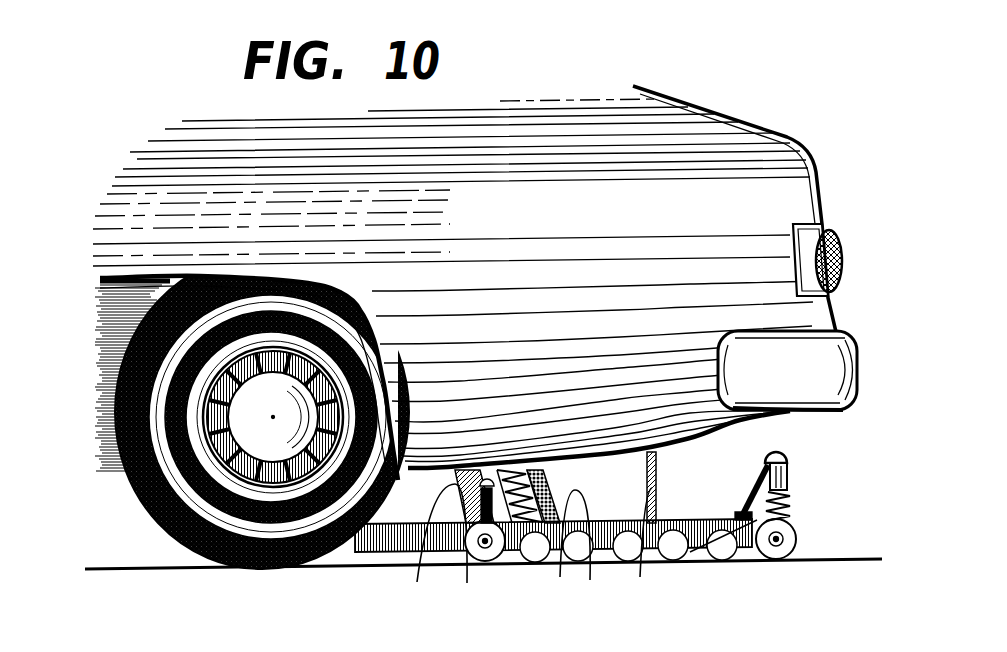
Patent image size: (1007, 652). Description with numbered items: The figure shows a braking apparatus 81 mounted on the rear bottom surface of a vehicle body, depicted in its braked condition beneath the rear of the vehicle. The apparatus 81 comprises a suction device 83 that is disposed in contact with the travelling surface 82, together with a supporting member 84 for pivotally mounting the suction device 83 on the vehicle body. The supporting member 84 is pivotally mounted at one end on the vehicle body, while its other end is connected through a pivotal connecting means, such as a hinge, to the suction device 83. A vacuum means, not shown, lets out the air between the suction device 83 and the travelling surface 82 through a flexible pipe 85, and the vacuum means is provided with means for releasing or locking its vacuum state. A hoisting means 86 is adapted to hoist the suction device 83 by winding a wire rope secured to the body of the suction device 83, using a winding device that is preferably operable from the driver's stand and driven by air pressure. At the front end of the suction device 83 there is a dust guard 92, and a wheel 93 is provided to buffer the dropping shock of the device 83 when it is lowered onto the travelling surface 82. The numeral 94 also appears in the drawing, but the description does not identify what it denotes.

The braking apparatus 81 is at (593, 543).
The travelling surface 82 is at (842, 560).
The suction device 83 is at (773, 500).
The supporting member 84 is at (417, 582).
The flexible pipe 85 is at (590, 577).
The hoisting means 86 is at (645, 560).
The dust guard 92 is at (378, 525).
The wheel 93 is at (502, 568).
The spring 94 is at (467, 568).